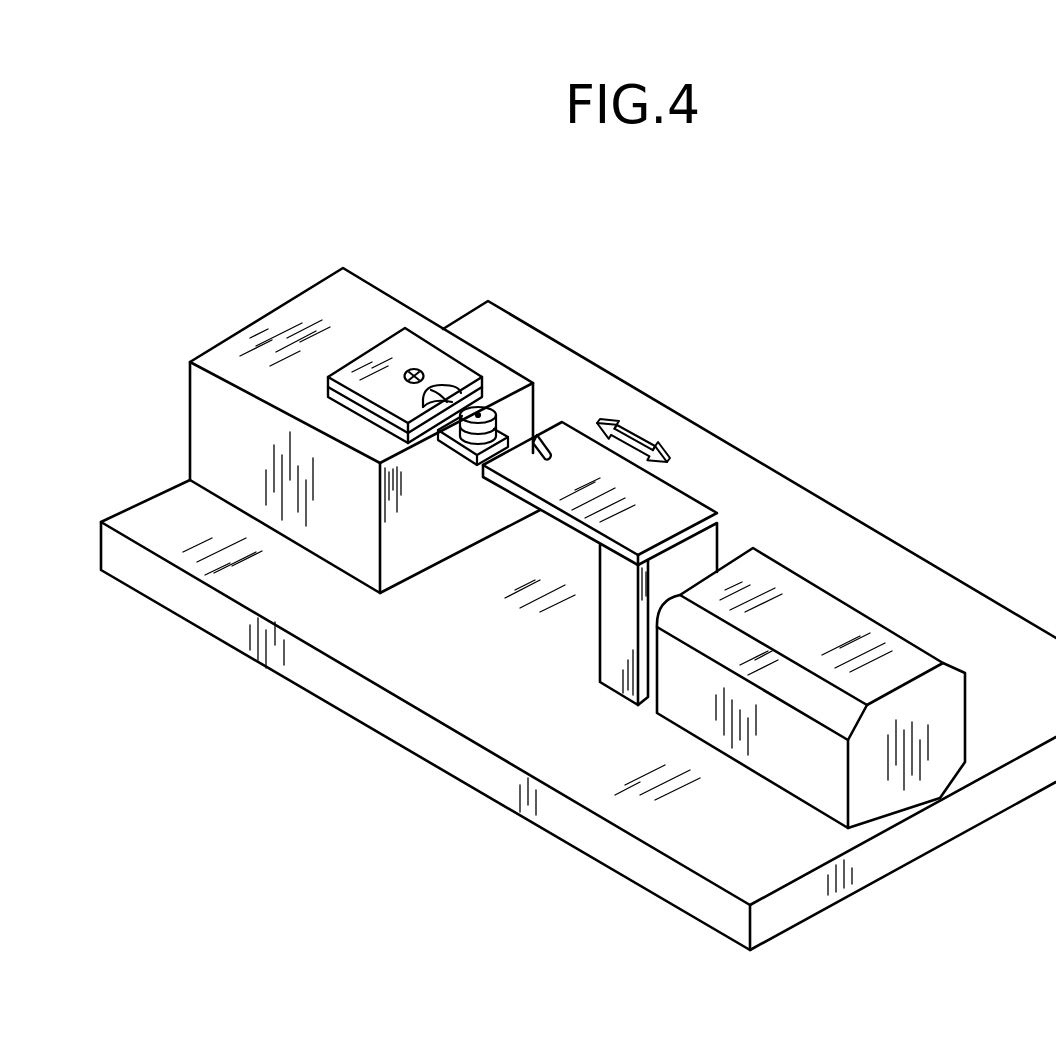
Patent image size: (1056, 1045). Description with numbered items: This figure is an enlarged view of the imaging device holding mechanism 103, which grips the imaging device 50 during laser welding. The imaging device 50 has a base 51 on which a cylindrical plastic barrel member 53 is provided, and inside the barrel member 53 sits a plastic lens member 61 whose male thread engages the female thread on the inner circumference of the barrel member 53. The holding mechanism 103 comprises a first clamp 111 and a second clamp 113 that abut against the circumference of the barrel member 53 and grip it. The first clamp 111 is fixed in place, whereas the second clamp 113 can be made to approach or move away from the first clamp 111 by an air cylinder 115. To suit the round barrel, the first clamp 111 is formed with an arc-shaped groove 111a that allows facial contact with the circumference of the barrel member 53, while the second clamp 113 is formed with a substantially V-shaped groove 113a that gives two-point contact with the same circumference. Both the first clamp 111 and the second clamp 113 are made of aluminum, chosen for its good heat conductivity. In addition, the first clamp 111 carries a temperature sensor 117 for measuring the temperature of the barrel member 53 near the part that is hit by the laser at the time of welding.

The imaging device holding mechanism 103 is at (692, 410).
The imaging device 50 is at (490, 502).
The first clamp 111 is at (397, 352).
The temperature sensor 117 is at (416, 366).
The arc-shaped groove 111a is at (446, 386).
The base 51 is at (457, 440).
The lens member 61 is at (498, 414).
The barrel member 53 is at (547, 438).
The second clamp 113 is at (677, 512).
The V-shaped groove 113a is at (556, 436).
The air cylinder 115 is at (817, 598).